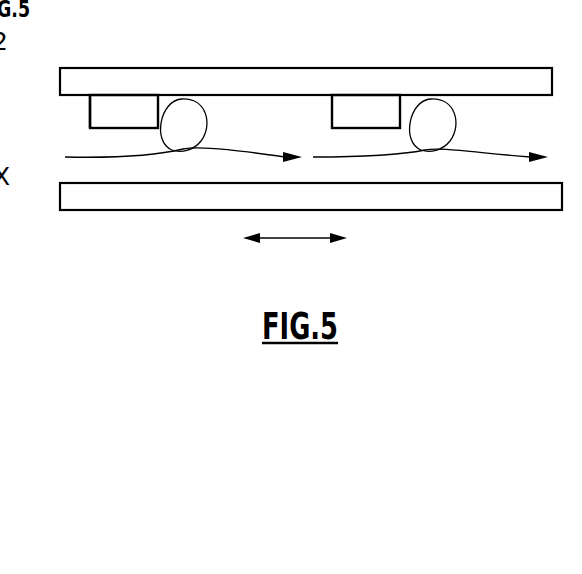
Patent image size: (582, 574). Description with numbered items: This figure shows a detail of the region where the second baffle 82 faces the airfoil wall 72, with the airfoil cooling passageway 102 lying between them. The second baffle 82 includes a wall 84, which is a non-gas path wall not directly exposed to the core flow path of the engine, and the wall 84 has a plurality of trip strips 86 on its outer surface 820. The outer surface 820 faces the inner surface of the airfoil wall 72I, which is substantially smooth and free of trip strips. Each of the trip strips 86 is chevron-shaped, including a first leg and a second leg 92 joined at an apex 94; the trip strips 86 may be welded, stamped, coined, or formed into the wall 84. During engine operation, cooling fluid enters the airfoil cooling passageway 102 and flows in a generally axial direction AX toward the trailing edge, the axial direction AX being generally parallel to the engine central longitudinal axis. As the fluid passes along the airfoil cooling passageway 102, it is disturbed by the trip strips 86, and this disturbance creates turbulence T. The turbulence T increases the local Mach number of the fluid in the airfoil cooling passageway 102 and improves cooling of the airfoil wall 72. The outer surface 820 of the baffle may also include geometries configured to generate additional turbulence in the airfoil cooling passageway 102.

The second baffle 82 is at (349, 52).
The wall 84 is at (415, 79).
The outer surface 820 is at (266, 97).
The second leg 92 is at (117, 112).
The apex 94 is at (90, 108).
The trip strips 86 is at (114, 145).
The airfoil cooling passageway 102 is at (229, 180).
The turbulence T is at (181, 127).
The airfoil wall 72 is at (465, 195).
The inner surface of the airfoil wall 72I is at (369, 173).
The axial direction AX is at (293, 239).